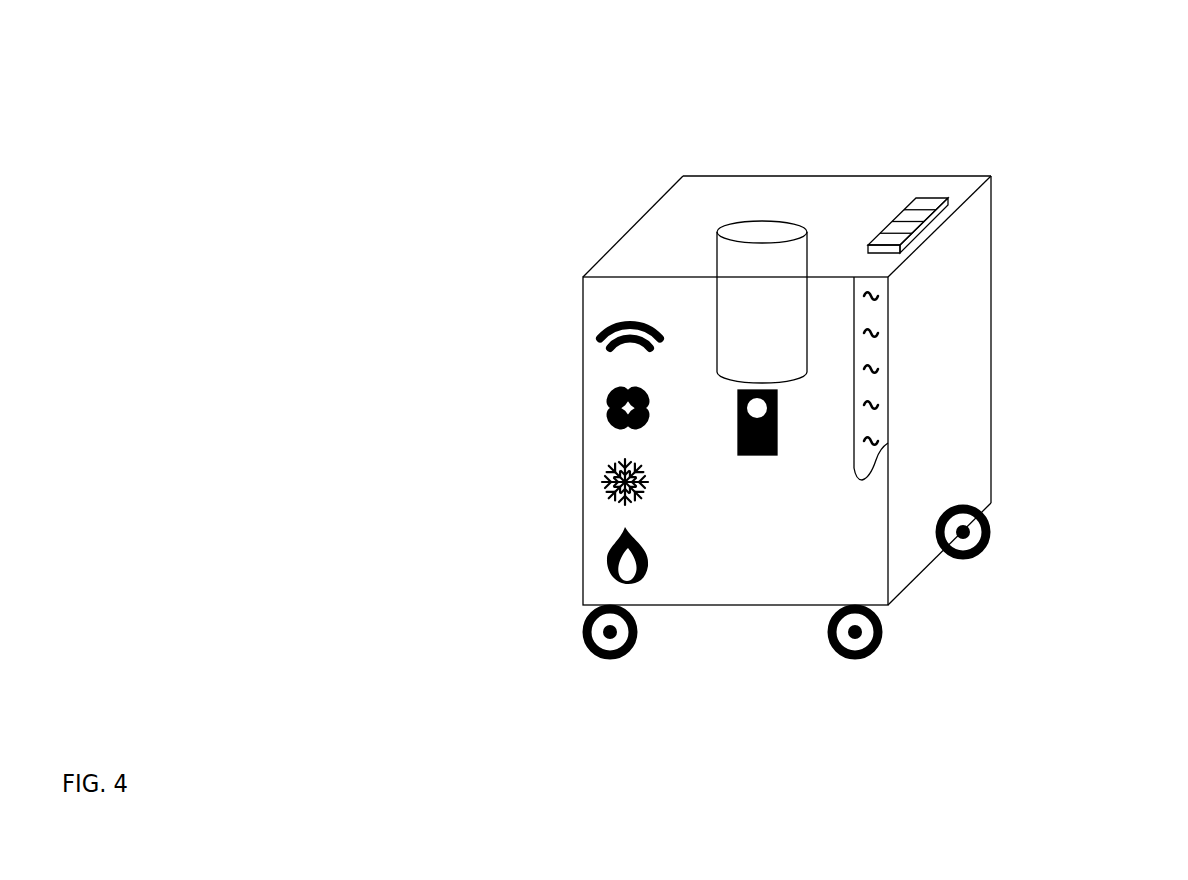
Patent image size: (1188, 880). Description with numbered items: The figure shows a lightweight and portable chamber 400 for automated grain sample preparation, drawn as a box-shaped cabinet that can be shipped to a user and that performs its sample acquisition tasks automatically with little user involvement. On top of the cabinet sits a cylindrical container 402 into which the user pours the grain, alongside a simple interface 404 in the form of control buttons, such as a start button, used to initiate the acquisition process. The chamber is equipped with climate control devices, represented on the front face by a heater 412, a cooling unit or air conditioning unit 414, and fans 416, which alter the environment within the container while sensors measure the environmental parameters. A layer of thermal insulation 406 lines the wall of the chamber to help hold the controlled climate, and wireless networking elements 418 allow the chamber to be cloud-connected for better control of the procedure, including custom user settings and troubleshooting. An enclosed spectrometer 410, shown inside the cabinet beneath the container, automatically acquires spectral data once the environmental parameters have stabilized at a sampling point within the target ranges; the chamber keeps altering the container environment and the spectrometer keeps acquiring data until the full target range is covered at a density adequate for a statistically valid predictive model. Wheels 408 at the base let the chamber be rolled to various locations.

The chamber 400 is at (392, 62).
The container 402 is at (760, 217).
The interface 404 is at (944, 190).
The thermal insulation 406 is at (880, 355).
The wheels 408 is at (892, 628).
The spectrometer 410 is at (758, 462).
The heater 412 is at (608, 557).
The air conditioning unit 414 is at (588, 483).
The fans 416 is at (590, 408).
The wireless networking elements 418 is at (592, 332).